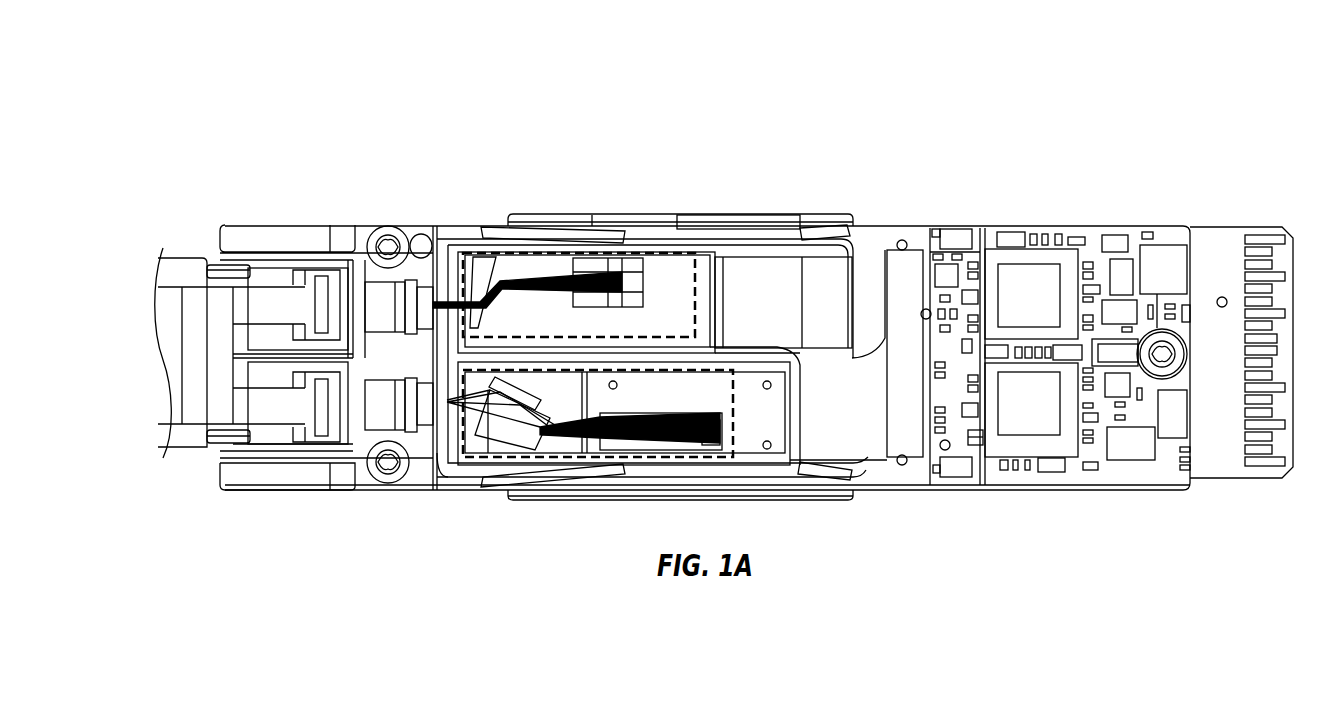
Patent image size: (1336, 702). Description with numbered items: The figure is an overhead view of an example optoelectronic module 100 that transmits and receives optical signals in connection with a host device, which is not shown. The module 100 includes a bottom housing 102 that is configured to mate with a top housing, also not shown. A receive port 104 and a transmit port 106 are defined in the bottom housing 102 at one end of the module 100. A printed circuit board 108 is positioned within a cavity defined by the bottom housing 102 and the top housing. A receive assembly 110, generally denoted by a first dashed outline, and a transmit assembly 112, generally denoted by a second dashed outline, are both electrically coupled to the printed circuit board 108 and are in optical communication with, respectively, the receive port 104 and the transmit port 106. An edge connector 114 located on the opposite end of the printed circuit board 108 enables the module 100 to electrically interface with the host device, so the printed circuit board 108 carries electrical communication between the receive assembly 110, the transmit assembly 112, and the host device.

The optoelectronic module 100 is at (1258, 97).
The bottom housing 102 is at (562, 213).
The receive port 104 is at (150, 397).
The transmit port 106 is at (150, 308).
The printed circuit board 108 is at (963, 265).
The receive assembly 110 is at (731, 433).
The transmit assembly 112 is at (697, 273).
The edge connector 114 is at (1262, 212).